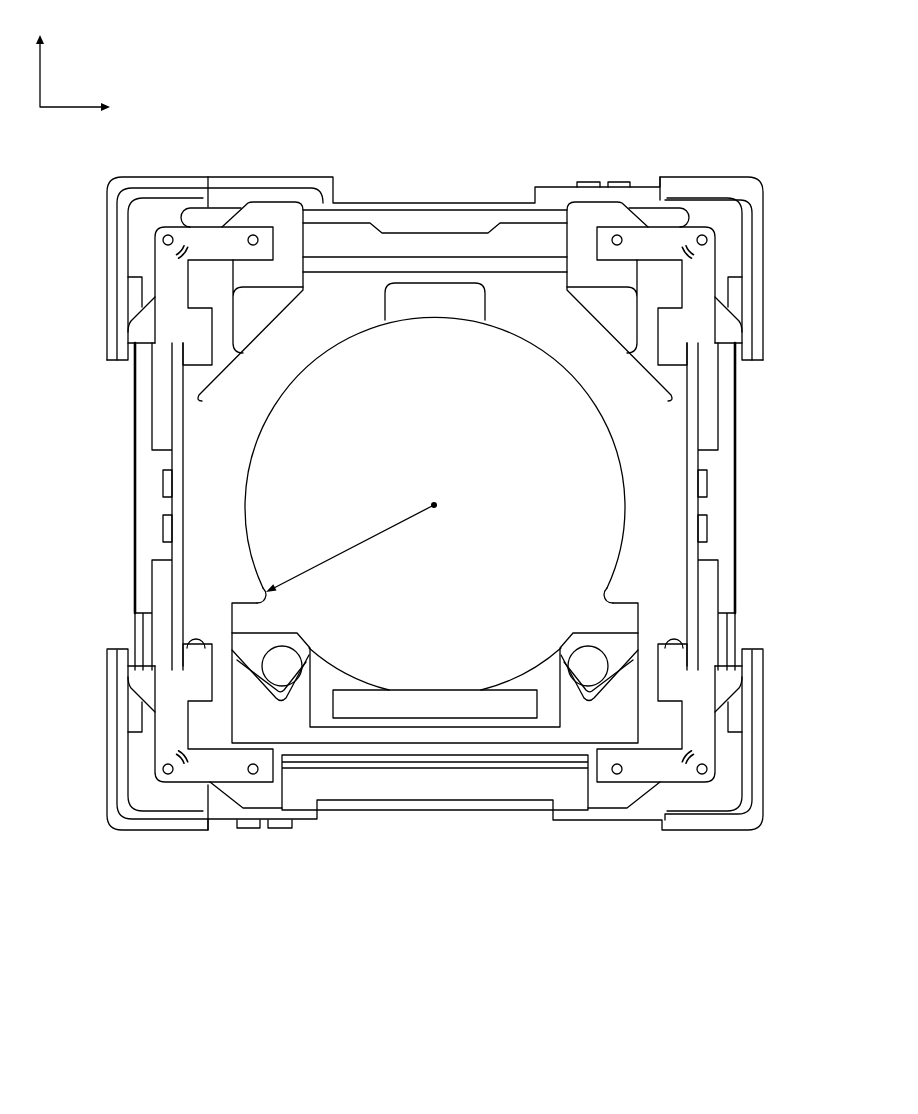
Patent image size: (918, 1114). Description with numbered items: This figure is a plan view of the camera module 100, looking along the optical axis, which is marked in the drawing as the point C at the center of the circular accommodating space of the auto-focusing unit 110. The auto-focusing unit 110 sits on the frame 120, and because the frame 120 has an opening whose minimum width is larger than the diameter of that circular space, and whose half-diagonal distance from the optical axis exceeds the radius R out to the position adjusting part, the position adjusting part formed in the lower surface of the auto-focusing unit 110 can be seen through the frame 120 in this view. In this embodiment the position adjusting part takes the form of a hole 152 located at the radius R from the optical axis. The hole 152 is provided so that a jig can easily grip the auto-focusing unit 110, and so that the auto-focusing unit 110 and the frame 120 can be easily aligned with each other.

The camera module 100 is at (737, 130).
The auto-focusing unit 110 is at (667, 510).
The frame 120 is at (743, 718).
The hole 152 is at (258, 614).